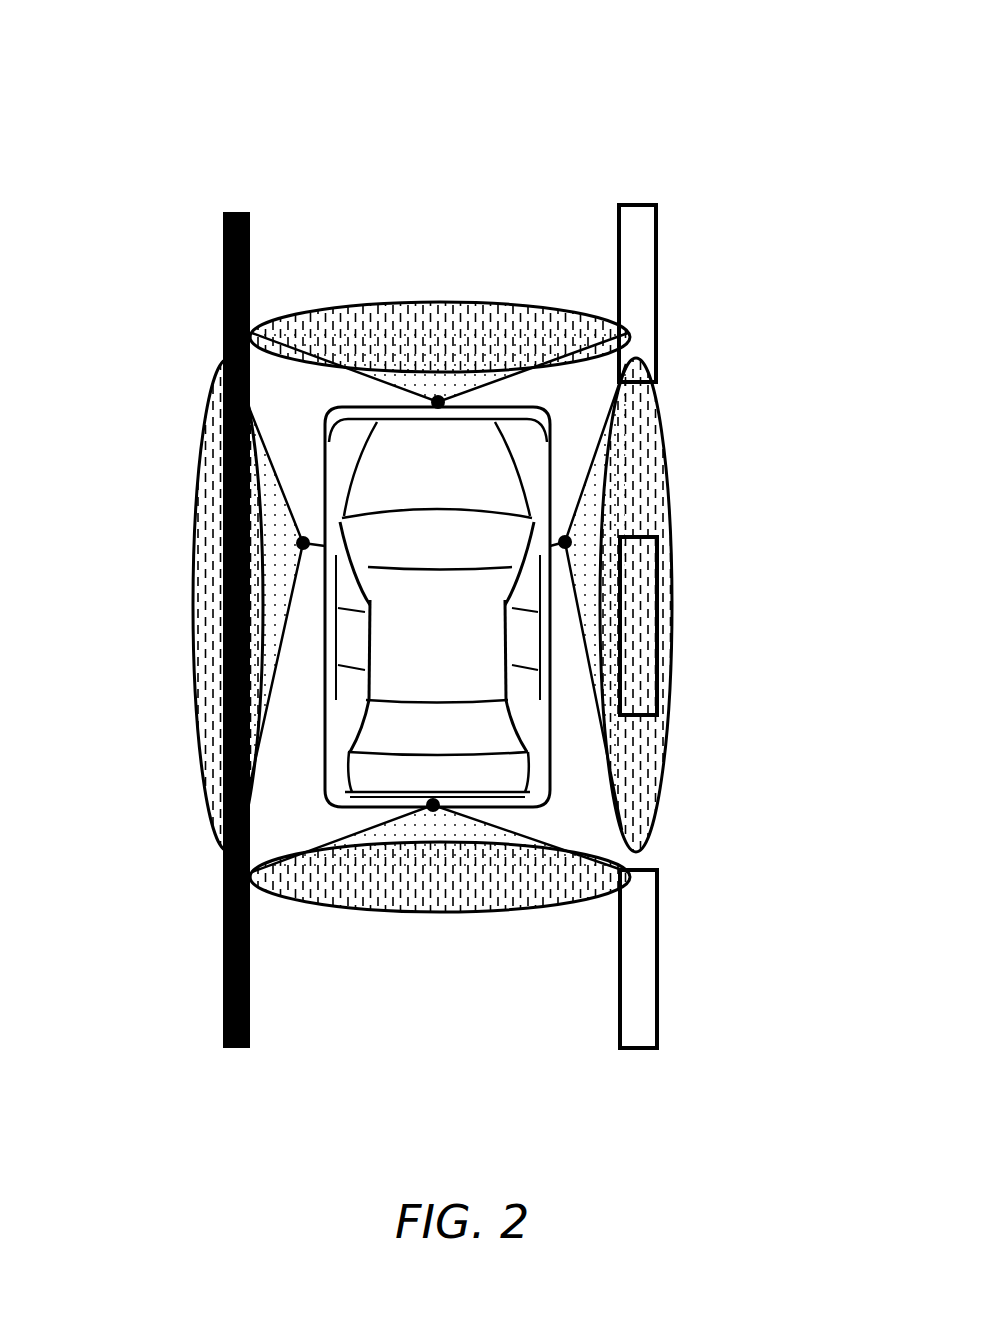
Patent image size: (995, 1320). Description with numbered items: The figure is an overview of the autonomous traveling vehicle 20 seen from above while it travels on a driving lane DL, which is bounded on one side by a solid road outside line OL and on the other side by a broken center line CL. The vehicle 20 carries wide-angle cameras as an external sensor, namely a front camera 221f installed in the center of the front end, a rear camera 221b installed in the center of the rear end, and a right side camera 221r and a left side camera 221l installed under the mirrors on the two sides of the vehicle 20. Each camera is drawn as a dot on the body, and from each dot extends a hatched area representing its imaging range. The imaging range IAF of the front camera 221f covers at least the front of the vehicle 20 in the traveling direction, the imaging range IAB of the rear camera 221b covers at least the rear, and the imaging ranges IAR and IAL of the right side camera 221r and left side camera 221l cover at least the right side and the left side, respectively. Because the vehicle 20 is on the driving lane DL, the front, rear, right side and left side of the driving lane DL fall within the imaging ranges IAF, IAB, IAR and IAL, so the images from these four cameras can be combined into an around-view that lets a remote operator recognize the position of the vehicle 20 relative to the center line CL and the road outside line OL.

The vehicle 20 is at (672, 328).
The front camera 221f is at (436, 395).
The rear camera 221b is at (434, 812).
The left side camera 221l is at (300, 546).
The right side camera 221r is at (572, 548).
The driving lane DL is at (379, 243).
The road outside line OL is at (223, 273).
The center line CL is at (635, 250).
The imaging range of the front camera IAF is at (530, 347).
The imaging range of the rear camera IAB is at (343, 880).
The imaging range of the left side camera IAL is at (197, 680).
The imaging range of the right side camera IAR is at (645, 757).